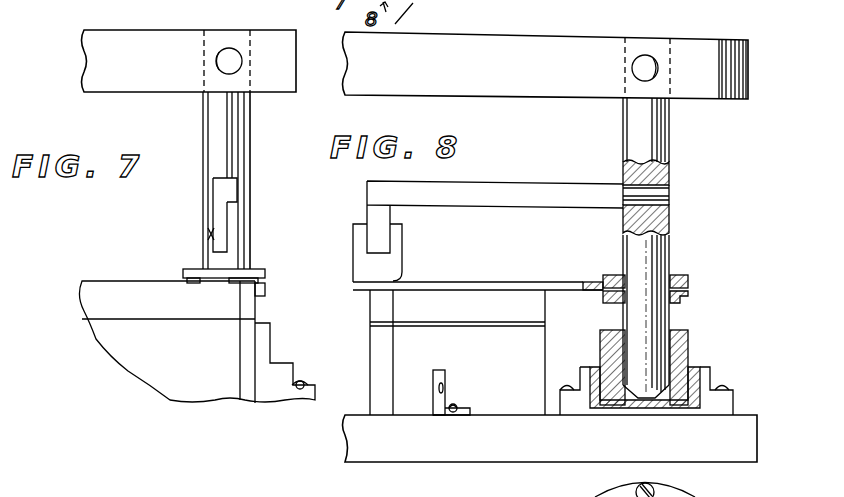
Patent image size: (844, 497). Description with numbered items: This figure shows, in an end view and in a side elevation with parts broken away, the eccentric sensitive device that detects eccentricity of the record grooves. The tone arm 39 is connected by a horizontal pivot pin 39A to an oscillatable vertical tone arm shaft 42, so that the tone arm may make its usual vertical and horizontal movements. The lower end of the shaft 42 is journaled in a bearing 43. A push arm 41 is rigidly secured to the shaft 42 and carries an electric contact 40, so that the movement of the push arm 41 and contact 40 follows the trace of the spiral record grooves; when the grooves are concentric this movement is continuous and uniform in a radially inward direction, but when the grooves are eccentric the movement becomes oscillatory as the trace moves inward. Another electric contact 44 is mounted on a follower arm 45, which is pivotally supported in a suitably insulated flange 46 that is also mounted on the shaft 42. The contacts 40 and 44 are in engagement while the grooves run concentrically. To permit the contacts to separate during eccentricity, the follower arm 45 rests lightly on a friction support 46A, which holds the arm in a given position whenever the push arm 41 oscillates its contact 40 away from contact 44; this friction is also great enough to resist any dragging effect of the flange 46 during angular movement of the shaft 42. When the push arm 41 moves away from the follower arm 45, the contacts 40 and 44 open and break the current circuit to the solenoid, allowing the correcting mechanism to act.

In FIG. 7, the tone arm 39 is at (92, 61).
In FIG. 8, the tone arm 39 is at (557, 44).
In FIG. 7, the horizontal pivot pin 39A is at (220, 61).
In FIG. 8, the horizontal pivot pin 39A is at (645, 62).
In FIG. 7, the electric contact 40 is at (213, 233).
In FIG. 8, the electric contact 40 is at (373, 221).
In FIG. 7, the push arm 41 is at (237, 188).
In FIG. 8, the push arm 41 is at (522, 183).
In FIG. 7, the tone arm shaft 42 is at (247, 128).
In FIG. 8, the tone arm shaft 42 is at (665, 142).
In FIG. 8, the bearing 43 is at (684, 341).
In FIG. 7, the electric contact 44 is at (207, 233).
In FIG. 8, the electric contact 44 is at (400, 247).
In FIG. 7, the follower arm 45 is at (212, 280).
In FIG. 8, the follower arm 45 is at (558, 282).
In FIG. 8, the insulated flange 46 is at (683, 277).
In FIG. 8, the friction support 46A is at (405, 296).